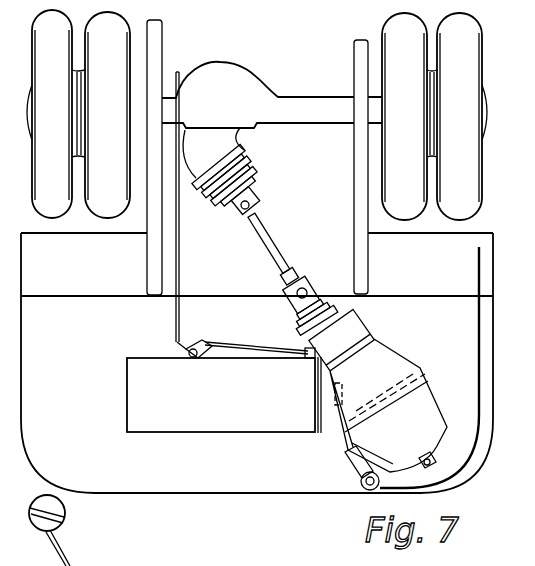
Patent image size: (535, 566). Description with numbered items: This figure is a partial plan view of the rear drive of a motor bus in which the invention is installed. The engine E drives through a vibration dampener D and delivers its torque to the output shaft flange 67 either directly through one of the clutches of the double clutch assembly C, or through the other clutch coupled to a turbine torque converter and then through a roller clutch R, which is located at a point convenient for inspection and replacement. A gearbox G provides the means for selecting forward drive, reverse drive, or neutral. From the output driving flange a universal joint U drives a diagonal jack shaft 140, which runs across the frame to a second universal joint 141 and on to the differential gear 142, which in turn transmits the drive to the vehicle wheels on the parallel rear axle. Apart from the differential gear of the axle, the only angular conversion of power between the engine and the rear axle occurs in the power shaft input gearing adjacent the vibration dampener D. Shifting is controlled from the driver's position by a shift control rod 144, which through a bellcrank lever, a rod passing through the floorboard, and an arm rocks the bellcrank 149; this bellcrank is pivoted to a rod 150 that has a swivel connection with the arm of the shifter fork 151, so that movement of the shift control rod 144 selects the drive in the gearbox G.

The shift control rod 144 is at (178, 90).
The differential gear 142 is at (245, 89).
The universal joint 141 is at (250, 200).
The diagonal jack shaft 140 is at (272, 247).
The universal joint U is at (303, 284).
The output shaft flange 67 is at (337, 301).
The gearbox G is at (366, 326).
The double clutch assembly C is at (423, 378).
The bellcrank 149 is at (182, 352).
The rod 150 is at (232, 329).
The shifter fork 151 is at (309, 347).
The engine E is at (182, 428).
The vibration dampener D is at (334, 410).
The roller clutch R is at (434, 463).